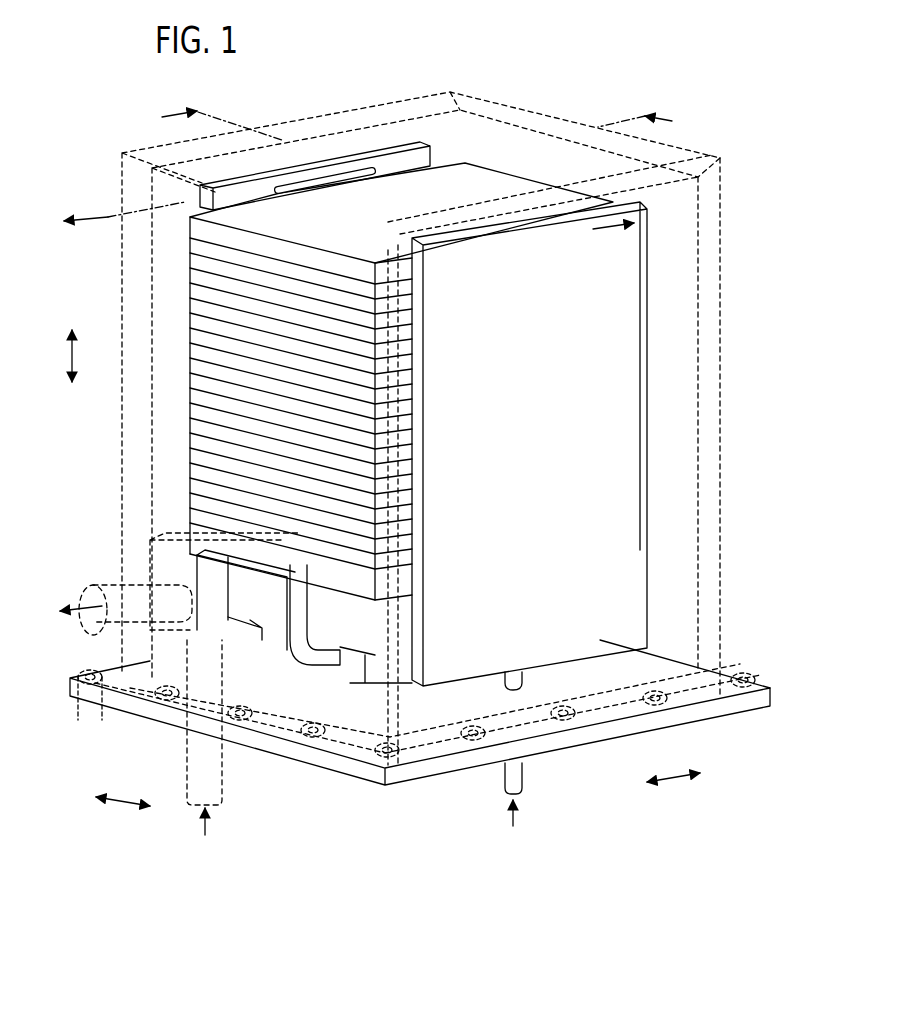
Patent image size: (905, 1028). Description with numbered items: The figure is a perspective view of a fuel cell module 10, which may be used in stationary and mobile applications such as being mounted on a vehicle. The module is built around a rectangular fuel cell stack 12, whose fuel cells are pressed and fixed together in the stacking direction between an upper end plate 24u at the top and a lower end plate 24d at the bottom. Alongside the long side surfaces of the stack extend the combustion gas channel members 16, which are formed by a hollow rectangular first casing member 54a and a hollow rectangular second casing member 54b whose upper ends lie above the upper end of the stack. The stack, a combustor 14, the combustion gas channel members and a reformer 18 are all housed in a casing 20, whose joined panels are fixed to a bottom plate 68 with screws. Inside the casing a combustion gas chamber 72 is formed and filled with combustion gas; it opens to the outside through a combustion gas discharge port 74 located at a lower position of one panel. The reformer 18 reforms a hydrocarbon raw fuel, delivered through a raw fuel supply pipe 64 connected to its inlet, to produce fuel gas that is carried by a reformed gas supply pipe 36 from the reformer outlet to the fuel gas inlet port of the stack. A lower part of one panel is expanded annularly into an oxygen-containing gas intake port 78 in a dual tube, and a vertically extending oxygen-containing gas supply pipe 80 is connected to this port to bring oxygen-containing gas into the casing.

The fuel cell module 10 is at (327, 78).
The casing 20 is at (558, 108).
The combustion gas chamber 72 is at (696, 467).
The fuel cell stack 12 is at (190, 382).
The upper end plate 24u is at (486, 178).
The lower end plate 24d is at (409, 576).
The first casing member 54a is at (384, 165).
The second casing member 54b is at (565, 648).
The oxygen-containing gas intake port 78 is at (172, 537).
The oxygen-containing gas supply pipe 80 is at (188, 806).
The combustor 14 is at (262, 632).
The reformed gas supply pipe 36 is at (307, 661).
The bottom plate 68 is at (735, 712).
The reformer 18 is at (357, 690).
The combustion gas channel member 16 is at (464, 684).
The combustion gas discharge port 74 is at (92, 690).
The raw fuel supply pipe 64 is at (524, 773).